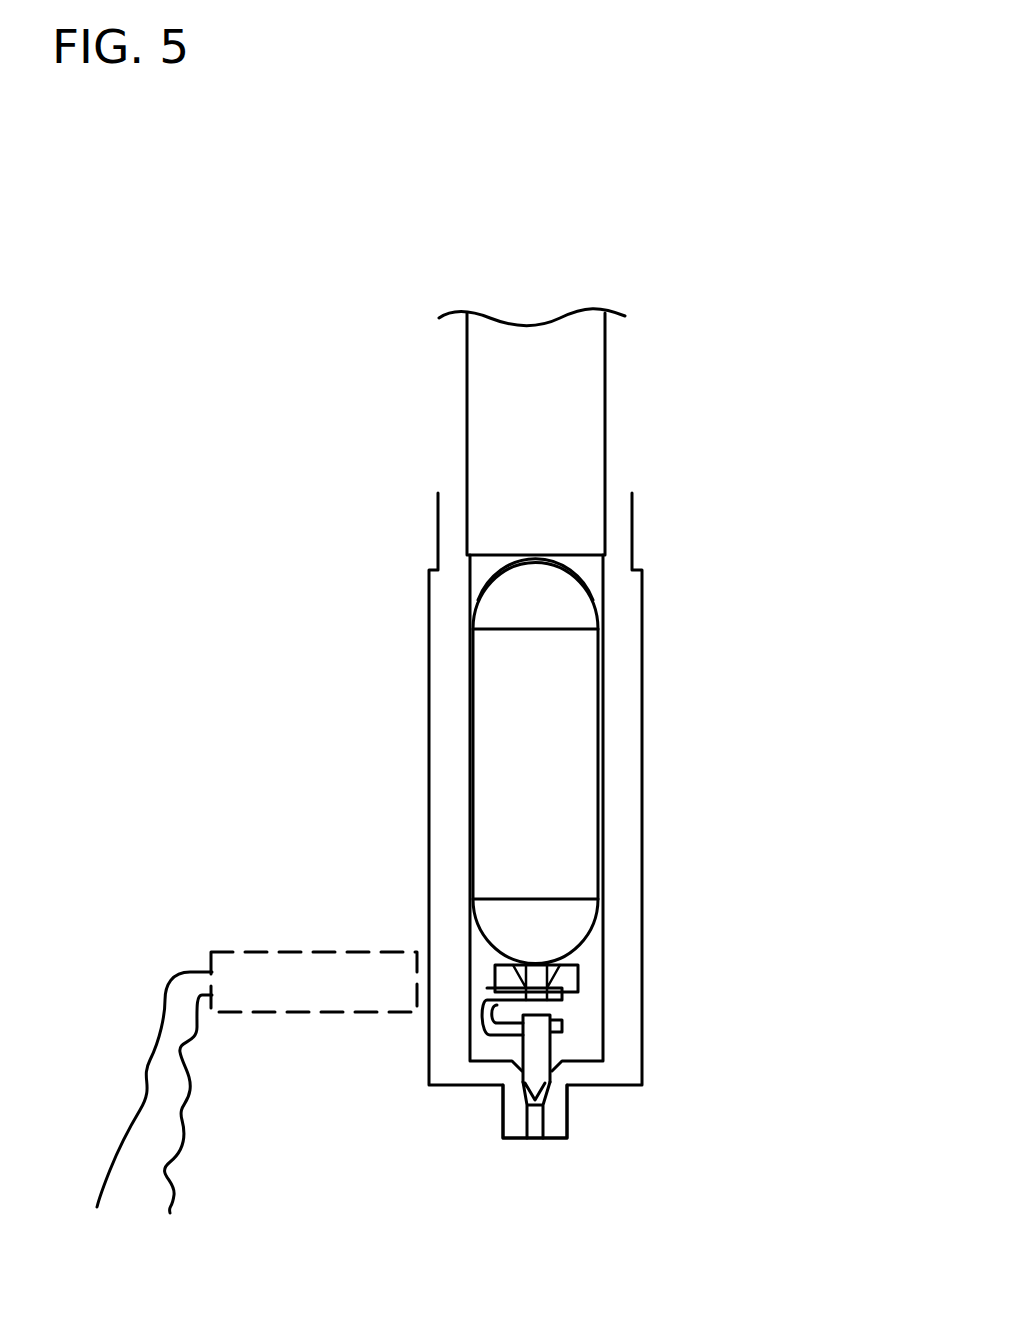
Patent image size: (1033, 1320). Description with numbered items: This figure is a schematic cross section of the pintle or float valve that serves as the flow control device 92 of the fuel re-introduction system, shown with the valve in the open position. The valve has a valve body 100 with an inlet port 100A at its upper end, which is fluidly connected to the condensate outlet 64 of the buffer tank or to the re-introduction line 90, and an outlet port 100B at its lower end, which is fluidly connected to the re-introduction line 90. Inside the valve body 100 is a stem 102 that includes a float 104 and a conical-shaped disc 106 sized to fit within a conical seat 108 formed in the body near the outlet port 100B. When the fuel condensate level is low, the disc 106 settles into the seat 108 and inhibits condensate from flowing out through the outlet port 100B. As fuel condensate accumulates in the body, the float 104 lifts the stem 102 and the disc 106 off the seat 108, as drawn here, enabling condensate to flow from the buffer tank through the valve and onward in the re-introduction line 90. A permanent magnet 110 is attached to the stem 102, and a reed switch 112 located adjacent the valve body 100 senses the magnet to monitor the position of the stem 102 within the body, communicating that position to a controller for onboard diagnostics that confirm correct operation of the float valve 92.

The condensate outlet 64 is at (616, 429).
The re-introduction line 90 is at (616, 429).
The inlet port 100A is at (593, 360).
The valve body 100 is at (624, 885).
The outlet port 100B is at (567, 1118).
The flow control device 92 is at (724, 703).
The stem 102 is at (497, 582).
The float 104 is at (562, 808).
The permanent magnet 110 is at (492, 972).
The seat 108 is at (548, 1078).
The conical-shaped disc 106 is at (522, 1071).
The reed switch 112 is at (297, 1010).